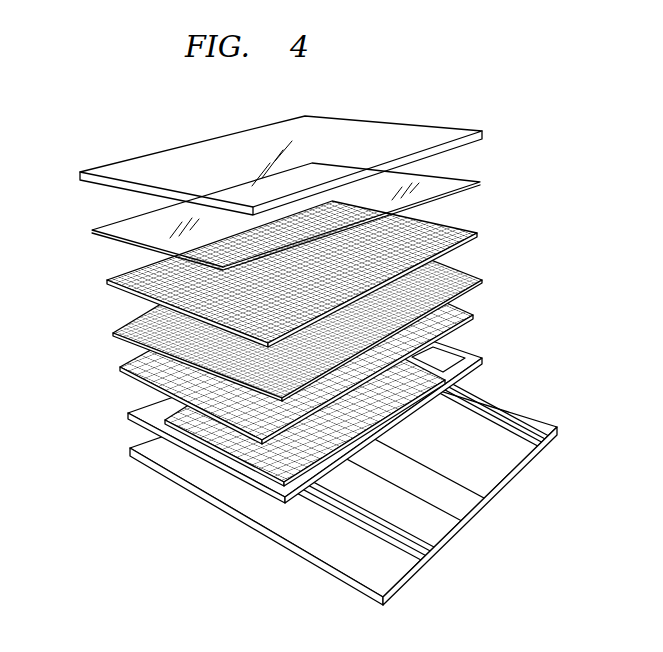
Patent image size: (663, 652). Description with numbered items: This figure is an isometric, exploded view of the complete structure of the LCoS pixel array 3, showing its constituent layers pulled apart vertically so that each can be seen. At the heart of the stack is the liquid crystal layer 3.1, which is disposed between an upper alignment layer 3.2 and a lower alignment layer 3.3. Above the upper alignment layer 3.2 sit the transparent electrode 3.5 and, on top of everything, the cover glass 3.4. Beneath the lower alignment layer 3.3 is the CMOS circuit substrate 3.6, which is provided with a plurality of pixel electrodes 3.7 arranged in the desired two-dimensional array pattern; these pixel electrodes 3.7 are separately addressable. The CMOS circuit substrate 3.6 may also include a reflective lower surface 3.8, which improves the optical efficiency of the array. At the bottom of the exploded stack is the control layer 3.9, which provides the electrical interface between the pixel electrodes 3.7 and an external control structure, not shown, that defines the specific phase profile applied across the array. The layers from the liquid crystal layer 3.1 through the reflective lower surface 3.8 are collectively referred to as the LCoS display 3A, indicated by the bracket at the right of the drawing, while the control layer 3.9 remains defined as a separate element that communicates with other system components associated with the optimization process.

The LCoS pixel array 3 is at (408, 86).
The LCoS display 3A is at (552, 102).
The liquid crystal layer 3.1 is at (118, 336).
The alignment layer 3.2 is at (113, 283).
The alignment layer 3.3 is at (133, 372).
The cover glass 3.4 is at (110, 166).
The transparent electrode 3.5 is at (122, 232).
The CMOS circuit substrate 3.6 is at (158, 416).
The pixel electrodes 3.7 is at (254, 466).
The reflective lower surface 3.8 is at (479, 356).
The control layer 3.9 is at (332, 566).